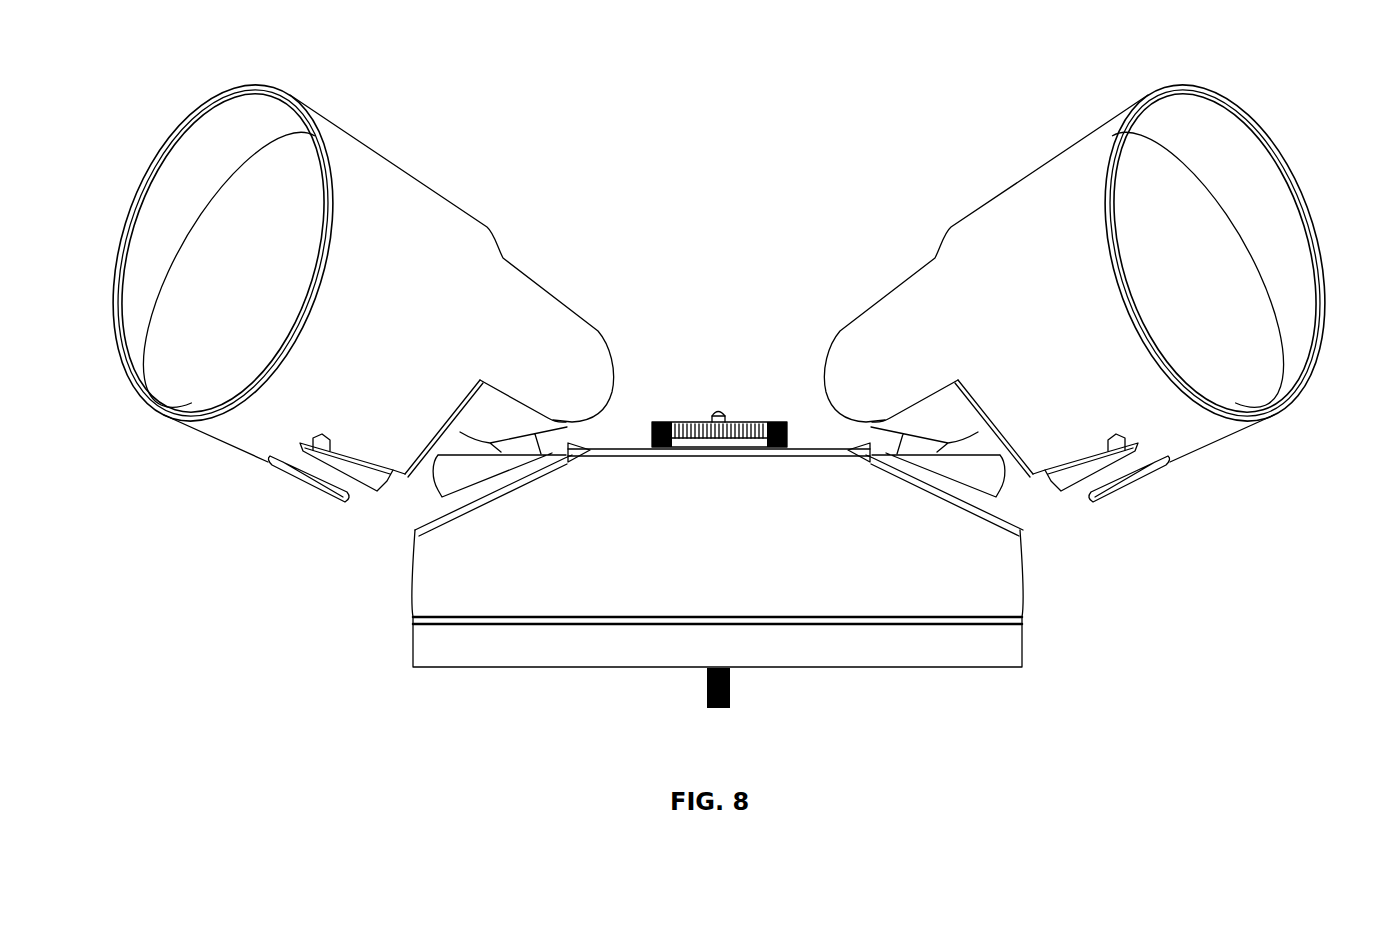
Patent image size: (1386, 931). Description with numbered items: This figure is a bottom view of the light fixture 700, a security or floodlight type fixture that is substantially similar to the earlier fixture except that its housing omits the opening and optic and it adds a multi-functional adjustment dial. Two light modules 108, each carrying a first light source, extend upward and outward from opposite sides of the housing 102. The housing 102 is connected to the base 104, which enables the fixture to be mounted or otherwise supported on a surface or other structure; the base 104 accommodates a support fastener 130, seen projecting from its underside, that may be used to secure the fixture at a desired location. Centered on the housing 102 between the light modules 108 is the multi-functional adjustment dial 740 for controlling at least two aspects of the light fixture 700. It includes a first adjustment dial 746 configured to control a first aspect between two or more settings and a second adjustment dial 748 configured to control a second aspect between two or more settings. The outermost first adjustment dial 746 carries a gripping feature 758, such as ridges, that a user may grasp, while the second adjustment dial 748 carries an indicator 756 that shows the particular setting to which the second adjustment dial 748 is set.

The light fixture 700 is at (581, 129).
The light module 108 is at (160, 157).
The housing 102 is at (432, 593).
The base 104 is at (1000, 655).
The support fastener 130 is at (730, 699).
The multi-functional adjustment dial 740 is at (777, 421).
The first adjustment dial 746 is at (678, 422).
The second adjustment dial 748 is at (718, 412).
The indicator 756 is at (718, 412).
The gripping feature 758 is at (716, 437).